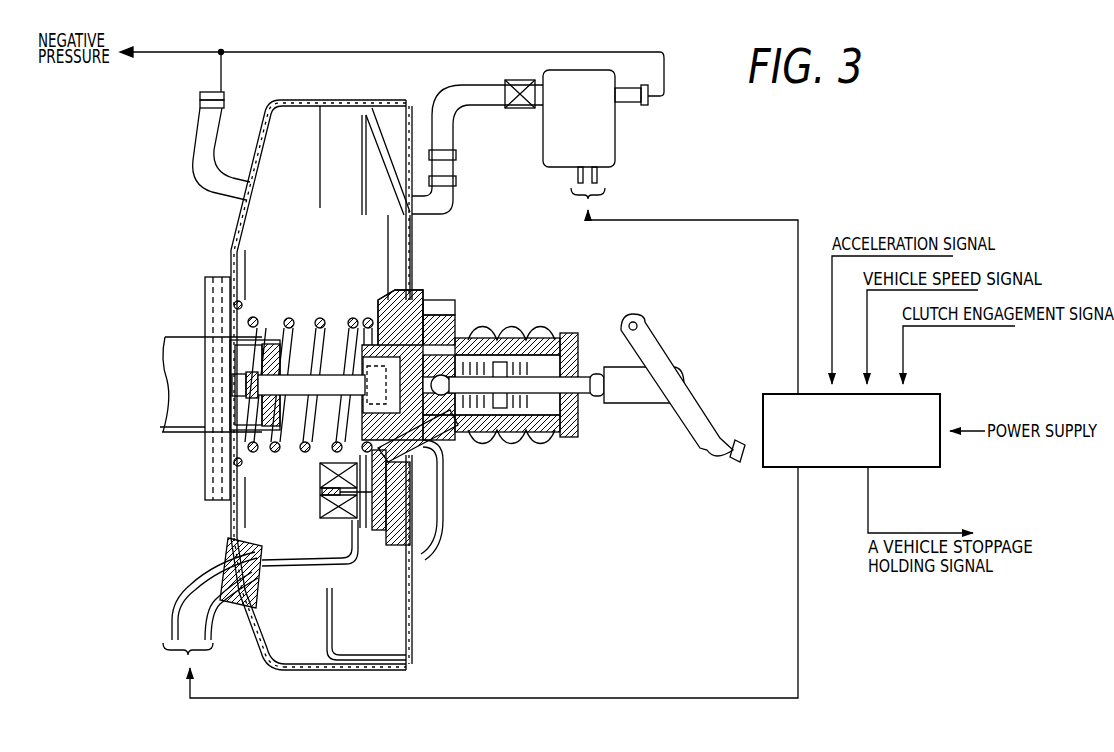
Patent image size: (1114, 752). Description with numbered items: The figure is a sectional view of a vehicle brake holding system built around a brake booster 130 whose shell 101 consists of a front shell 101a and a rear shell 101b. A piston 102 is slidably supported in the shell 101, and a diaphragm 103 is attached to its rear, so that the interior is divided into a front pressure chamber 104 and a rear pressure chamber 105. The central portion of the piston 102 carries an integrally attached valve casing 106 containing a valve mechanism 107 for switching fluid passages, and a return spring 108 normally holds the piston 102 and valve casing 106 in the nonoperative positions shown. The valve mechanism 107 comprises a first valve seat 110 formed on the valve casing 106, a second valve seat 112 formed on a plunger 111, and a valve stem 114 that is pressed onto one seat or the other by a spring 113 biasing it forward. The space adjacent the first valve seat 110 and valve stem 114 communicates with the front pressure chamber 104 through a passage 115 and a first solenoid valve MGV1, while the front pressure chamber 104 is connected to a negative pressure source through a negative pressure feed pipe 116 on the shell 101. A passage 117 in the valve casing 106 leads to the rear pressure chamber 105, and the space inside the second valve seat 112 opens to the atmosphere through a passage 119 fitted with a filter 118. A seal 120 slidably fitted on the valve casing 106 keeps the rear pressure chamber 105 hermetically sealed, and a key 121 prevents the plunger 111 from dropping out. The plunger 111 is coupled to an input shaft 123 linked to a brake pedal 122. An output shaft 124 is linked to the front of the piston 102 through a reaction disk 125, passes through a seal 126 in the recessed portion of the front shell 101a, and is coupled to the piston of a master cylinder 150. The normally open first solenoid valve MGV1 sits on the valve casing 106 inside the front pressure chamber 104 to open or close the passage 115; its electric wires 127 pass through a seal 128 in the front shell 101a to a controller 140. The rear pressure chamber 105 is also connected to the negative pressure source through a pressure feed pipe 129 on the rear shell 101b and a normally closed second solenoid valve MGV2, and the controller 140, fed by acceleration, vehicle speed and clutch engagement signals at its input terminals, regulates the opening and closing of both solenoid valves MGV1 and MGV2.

The shell 101 is at (315, 673).
The front shell 101a is at (273, 657).
The rear shell 101b is at (407, 623).
The piston 102 is at (407, 578).
The diaphragm 103 is at (335, 642).
The front pressure chamber 104 is at (302, 543).
The rear pressure chamber 105 is at (425, 522).
The valve casing 106 is at (333, 450).
The valve mechanism 107 is at (480, 445).
The return spring 108 is at (288, 320).
The first valve seat 110 is at (452, 338).
The plunger 111 is at (380, 358).
The second valve seat 112 is at (512, 340).
The spring 113 is at (522, 355).
The valve stem 114 is at (460, 355).
The passage 115 is at (458, 435).
The negative pressure feed pipe 116 is at (192, 169).
The passage 117 is at (447, 297).
The filter 118 is at (557, 436).
The passage 119 is at (540, 438).
The seal 120 is at (492, 335).
The key 121 is at (376, 292).
The brake pedal 122 is at (655, 350).
The input shaft 123 is at (601, 398).
The output shaft 124 is at (298, 394).
The reaction disk 125 is at (348, 345).
The seal 126 is at (268, 355).
The electric wires 127 is at (292, 567).
The seal 128 is at (213, 578).
The pressure feed pipe 129 is at (445, 200).
The brake booster 130 is at (426, 601).
The controller 140 is at (910, 468).
The master cylinder 150 is at (173, 353).
The first solenoid valve MGV1 is at (318, 507).
The second solenoid valve MGV2 is at (605, 142).